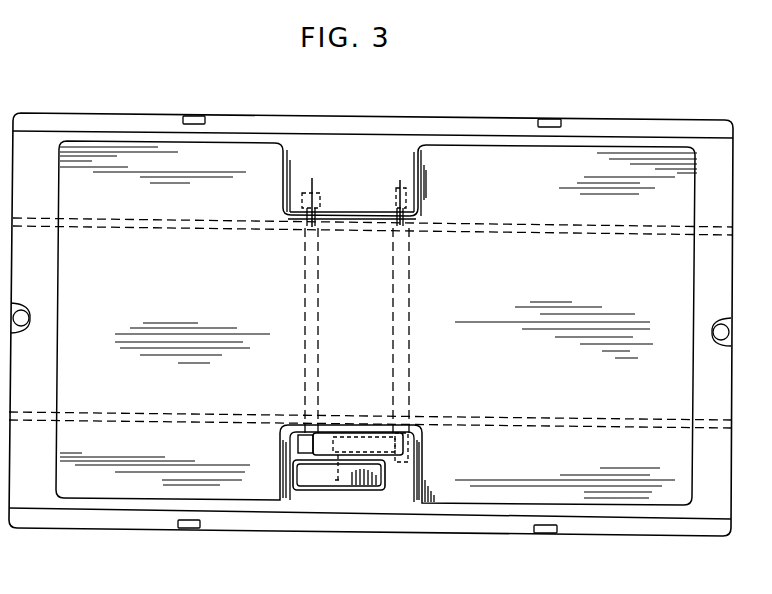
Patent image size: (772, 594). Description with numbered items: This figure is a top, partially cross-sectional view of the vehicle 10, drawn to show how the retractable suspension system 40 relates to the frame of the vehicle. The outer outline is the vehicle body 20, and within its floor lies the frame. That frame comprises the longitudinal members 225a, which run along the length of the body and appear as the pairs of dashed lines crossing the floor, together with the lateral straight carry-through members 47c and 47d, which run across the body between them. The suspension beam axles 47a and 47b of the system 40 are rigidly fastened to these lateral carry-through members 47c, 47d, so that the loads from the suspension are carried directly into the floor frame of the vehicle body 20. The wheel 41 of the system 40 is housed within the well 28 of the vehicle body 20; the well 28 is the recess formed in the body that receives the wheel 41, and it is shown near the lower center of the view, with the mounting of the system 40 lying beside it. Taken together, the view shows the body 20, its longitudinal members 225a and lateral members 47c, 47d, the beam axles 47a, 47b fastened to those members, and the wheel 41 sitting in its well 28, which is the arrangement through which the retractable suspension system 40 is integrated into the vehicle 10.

The vehicle 10 is at (545, 98).
The vehicle body 20 is at (552, 118).
The well 28 is at (284, 206).
The longitudinal members 225a is at (535, 225).
The system 40 is at (377, 442).
The wheel 41 is at (305, 481).
The suspension beam axle 47a is at (398, 458).
The suspension beam axle 47b is at (298, 441).
The lateral straight carry-through member 47c is at (408, 290).
The lateral straight carry-through member 47d is at (303, 286).